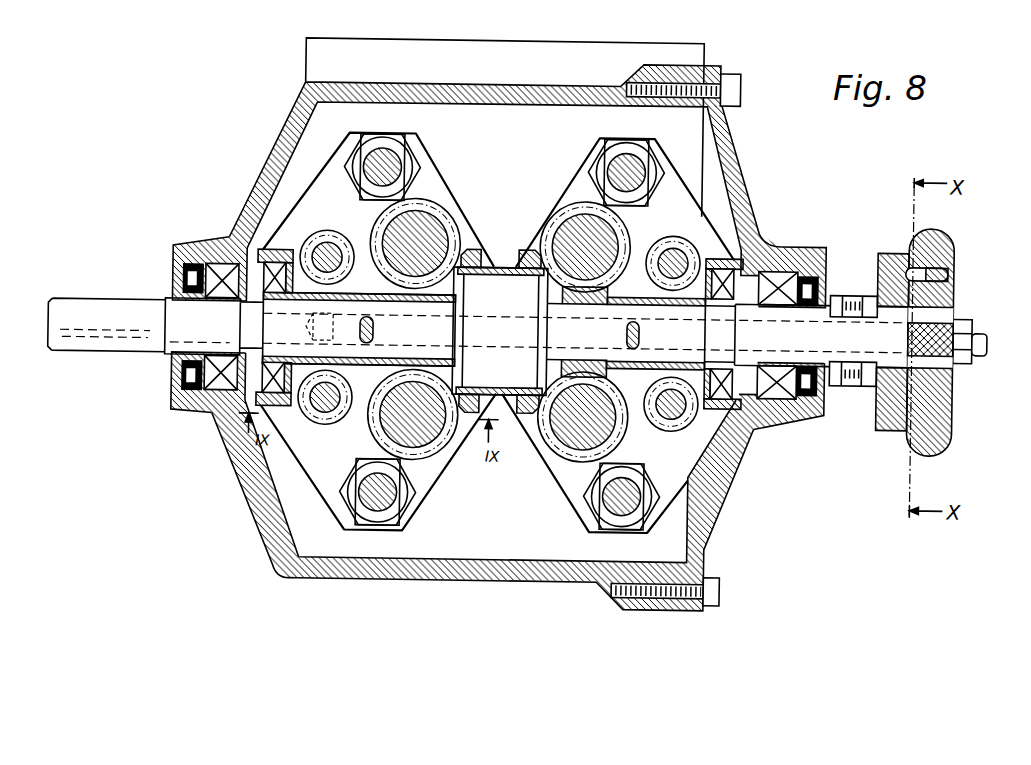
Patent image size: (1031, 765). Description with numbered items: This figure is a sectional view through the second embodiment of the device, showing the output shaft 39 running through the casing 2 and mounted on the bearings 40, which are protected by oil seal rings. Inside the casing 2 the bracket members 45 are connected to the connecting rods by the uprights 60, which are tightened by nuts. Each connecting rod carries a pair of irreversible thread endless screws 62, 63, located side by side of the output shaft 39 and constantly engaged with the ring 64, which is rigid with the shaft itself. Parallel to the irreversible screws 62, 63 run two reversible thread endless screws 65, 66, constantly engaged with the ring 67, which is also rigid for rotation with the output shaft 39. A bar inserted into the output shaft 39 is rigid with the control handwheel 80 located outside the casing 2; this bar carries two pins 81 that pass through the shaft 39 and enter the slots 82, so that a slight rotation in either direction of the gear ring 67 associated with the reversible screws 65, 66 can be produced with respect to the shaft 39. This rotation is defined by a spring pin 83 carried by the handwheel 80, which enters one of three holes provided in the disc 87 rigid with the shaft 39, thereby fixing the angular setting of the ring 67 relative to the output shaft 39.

The casing 2 is at (280, 132).
The output shaft 39 is at (822, 338).
The bearings 40 is at (777, 396).
The bracket members 45 is at (300, 466).
The uprights 60 is at (380, 155).
The irreversible thread endless screw 62 is at (463, 436).
The irreversible thread endless screw 63 is at (568, 235).
The ring 64 is at (558, 360).
The reversible thread endless screw 65 is at (687, 417).
The reversible thread endless screw 66 is at (690, 245).
The ring 67 is at (730, 257).
The control handwheel 80 is at (935, 294).
The pins 81 is at (622, 328).
The slots 82 is at (640, 326).
The spring pin 83 is at (907, 257).
The disc 87 is at (890, 407).